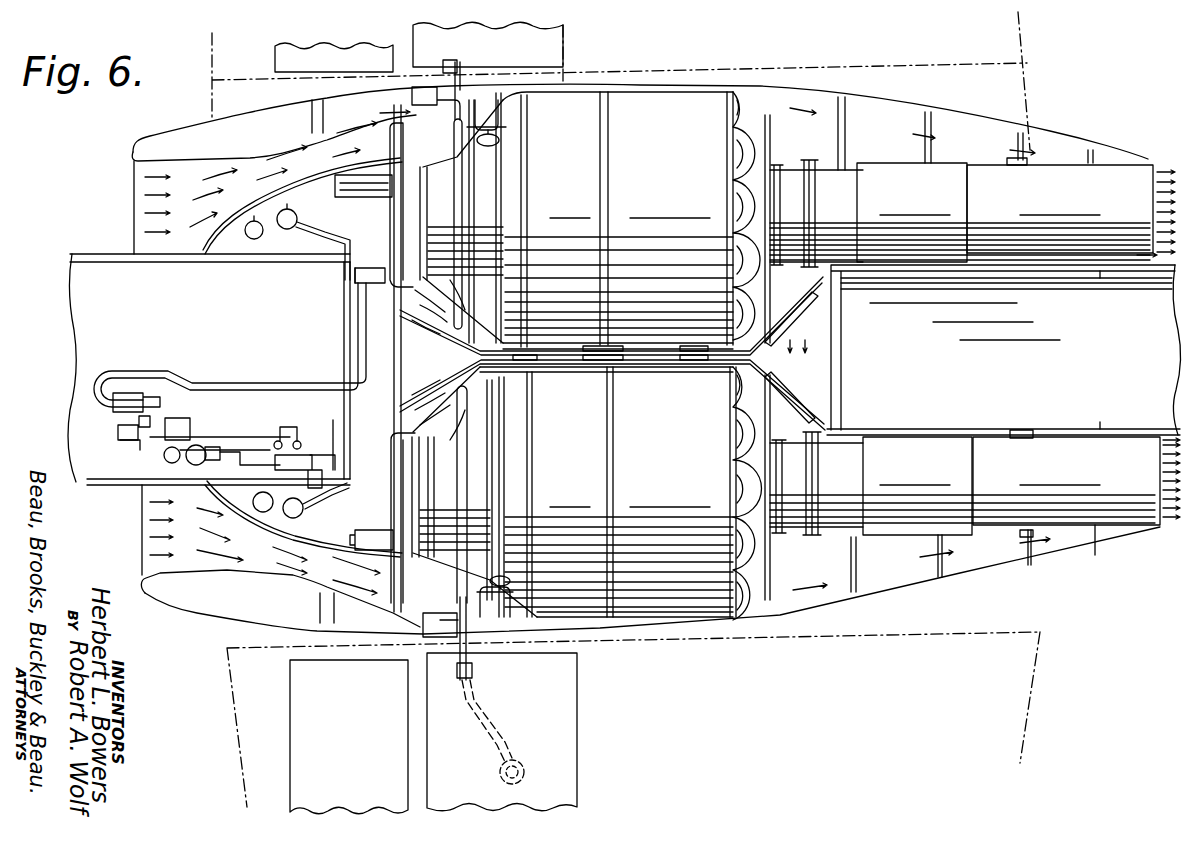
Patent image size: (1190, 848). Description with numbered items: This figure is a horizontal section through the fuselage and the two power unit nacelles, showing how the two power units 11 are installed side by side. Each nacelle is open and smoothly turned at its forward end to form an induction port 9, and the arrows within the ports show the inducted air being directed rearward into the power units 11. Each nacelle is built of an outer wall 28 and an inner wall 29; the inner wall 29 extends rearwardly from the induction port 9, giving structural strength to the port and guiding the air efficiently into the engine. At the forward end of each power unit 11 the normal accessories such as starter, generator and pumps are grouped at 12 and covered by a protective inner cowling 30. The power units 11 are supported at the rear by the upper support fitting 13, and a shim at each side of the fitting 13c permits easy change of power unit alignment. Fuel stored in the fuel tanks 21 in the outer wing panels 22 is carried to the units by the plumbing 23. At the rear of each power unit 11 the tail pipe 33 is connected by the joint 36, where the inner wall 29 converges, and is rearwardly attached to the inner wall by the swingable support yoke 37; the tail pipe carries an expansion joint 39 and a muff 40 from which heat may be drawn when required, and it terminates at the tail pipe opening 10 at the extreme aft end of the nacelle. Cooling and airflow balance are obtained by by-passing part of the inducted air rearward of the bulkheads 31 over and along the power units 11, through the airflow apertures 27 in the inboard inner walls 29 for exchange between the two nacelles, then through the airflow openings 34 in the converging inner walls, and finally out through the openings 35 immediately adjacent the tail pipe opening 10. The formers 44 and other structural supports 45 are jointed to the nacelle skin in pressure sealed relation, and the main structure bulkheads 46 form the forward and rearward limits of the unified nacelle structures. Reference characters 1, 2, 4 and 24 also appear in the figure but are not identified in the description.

The fuselage 1 is at (609, 370).
The wing outline 2 is at (1025, 31).
The nacelle 4 is at (646, 357).
The induction port 9 is at (133, 212).
The tail pipe opening 10 is at (1160, 160).
The power unit 11 is at (591, 356).
The accessories group 12 is at (319, 362).
The upper support fitting 13 is at (502, 142).
The shimmed fitting 13c is at (500, 120).
The fuel tank 21 is at (501, 723).
The outer wing panel 22 is at (482, 418).
The plumbing 23 is at (456, 112).
The center duct wall 24 is at (433, 332).
The airflow aperture 27 is at (445, 50).
The outer wall 28 is at (738, 88).
The inner wall 29 is at (243, 138).
The inner cowling 30 is at (300, 184).
The bulkhead 31 is at (804, 360).
The tail pipe 33 is at (965, 345).
The airflow opening 34 is at (782, 306).
The air outlet opening 35 is at (1127, 267).
The joint 36 is at (779, 167).
The swingable support yoke 37 is at (1020, 537).
The expansion joint 39 is at (818, 168).
The muff 40 is at (914, 349).
The former 44 is at (846, 102).
The structural support 45 is at (932, 120).
The main structure bulkhead 46 is at (394, 340).